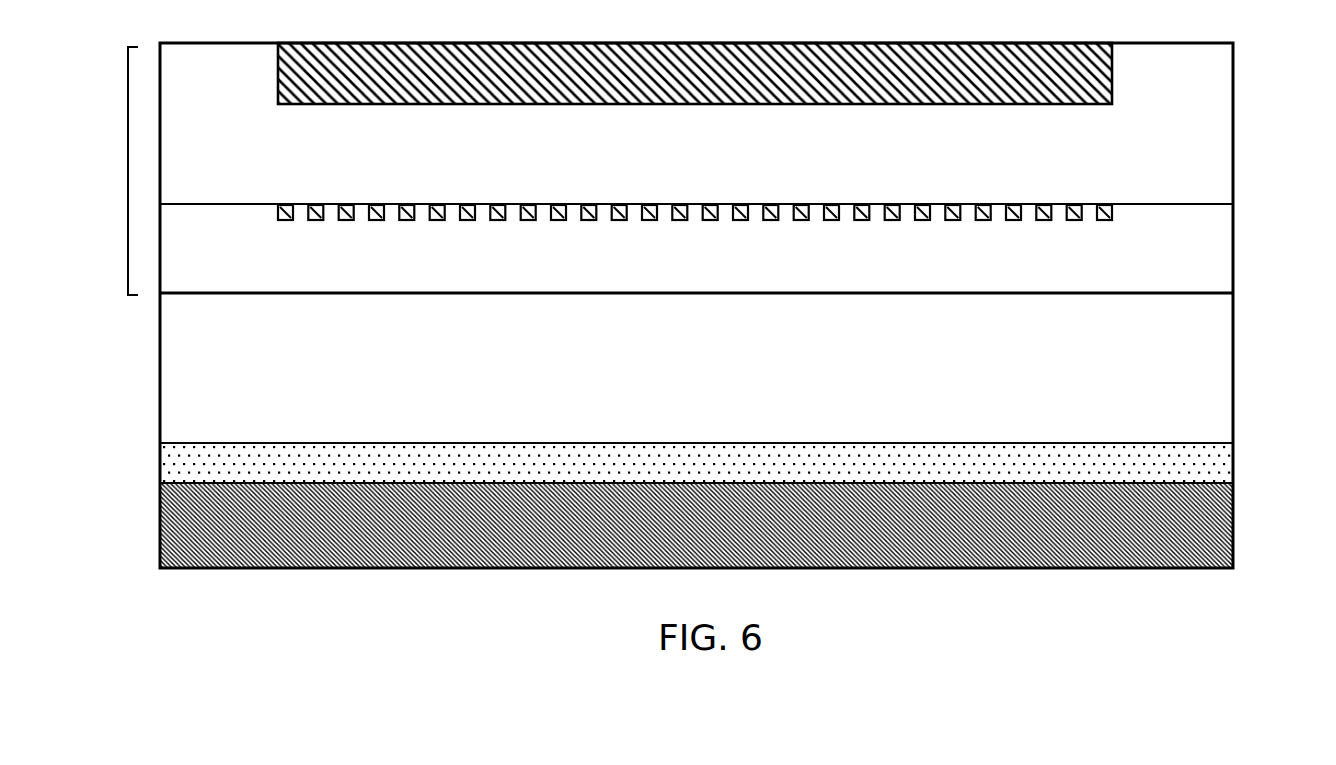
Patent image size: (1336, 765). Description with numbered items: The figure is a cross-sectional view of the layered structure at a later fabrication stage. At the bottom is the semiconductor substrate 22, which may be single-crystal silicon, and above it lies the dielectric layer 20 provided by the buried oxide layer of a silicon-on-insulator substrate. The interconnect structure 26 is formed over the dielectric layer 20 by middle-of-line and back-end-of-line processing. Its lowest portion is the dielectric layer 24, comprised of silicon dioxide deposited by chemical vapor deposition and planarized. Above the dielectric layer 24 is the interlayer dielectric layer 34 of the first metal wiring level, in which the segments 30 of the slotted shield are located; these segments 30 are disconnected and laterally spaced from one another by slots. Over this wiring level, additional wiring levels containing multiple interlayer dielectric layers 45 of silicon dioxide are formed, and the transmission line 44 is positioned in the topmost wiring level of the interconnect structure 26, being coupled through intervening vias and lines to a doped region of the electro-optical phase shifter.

The dielectric layer 20 is at (1198, 477).
The semiconductor substrate 22 is at (1203, 546).
The dielectric layer 24 is at (1198, 384).
The interconnect structure 26 is at (128, 171).
The segments 30 is at (300, 213).
The interlayer dielectric layer 34 is at (1198, 271).
The transmission line 44 is at (310, 77).
The interlayer dielectric layers 45 is at (1183, 113).